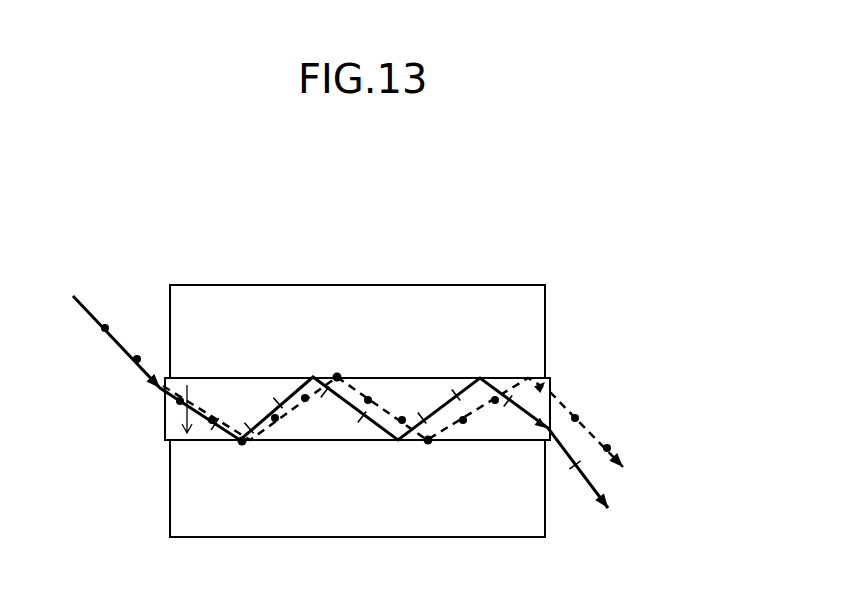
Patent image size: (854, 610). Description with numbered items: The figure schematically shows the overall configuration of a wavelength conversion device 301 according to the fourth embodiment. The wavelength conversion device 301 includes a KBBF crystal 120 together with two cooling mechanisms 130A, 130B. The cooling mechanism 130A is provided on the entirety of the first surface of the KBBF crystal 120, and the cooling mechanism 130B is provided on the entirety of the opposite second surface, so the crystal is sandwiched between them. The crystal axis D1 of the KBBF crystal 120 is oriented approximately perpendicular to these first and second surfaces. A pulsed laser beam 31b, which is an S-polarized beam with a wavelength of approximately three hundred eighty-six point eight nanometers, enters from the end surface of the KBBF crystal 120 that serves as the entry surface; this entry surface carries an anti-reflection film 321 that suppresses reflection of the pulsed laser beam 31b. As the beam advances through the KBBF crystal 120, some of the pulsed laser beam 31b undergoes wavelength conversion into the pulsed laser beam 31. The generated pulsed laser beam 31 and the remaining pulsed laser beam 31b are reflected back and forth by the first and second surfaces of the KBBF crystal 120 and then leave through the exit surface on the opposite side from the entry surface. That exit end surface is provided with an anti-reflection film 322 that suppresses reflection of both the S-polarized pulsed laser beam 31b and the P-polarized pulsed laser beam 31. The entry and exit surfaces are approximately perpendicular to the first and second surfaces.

The wavelength conversion device 301 is at (420, 216).
The cooling mechanism 130A is at (290, 284).
The cooling mechanism 130B is at (417, 537).
The KBBF crystal 120 is at (292, 441).
The anti-reflection film 321 is at (164, 434).
The anti-reflection film 322 is at (552, 385).
The crystal axis D1 is at (166, 417).
The pulsed laser beam 31 is at (594, 488).
The pulsed laser beam 31b is at (88, 313).